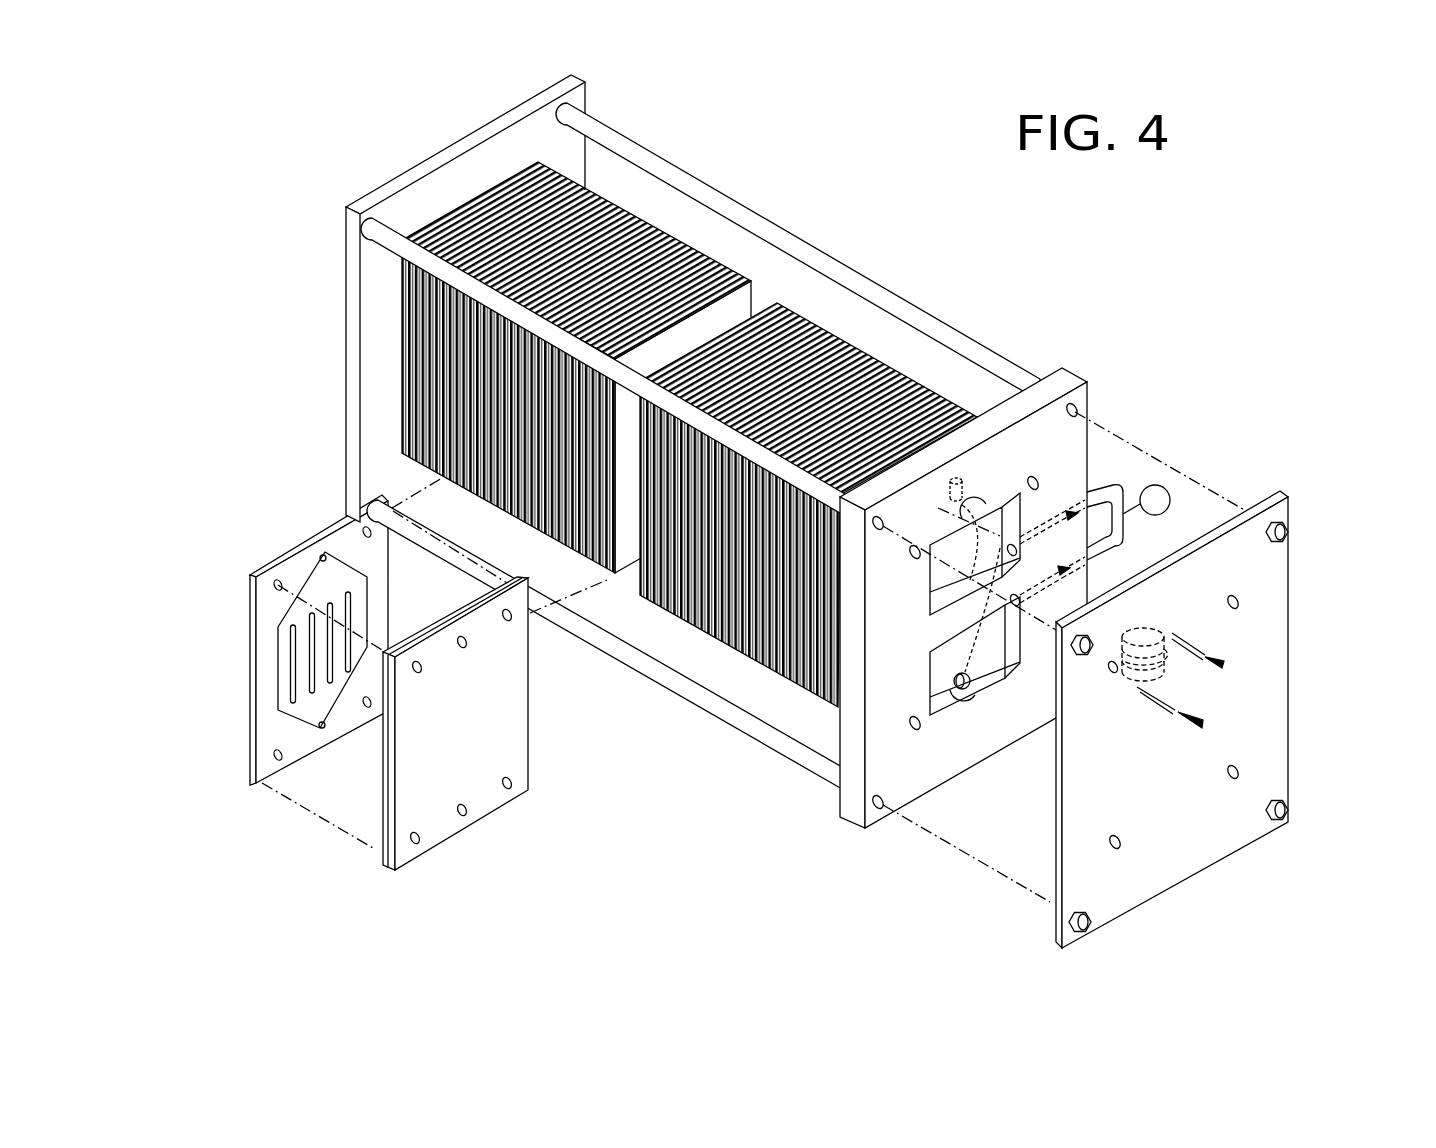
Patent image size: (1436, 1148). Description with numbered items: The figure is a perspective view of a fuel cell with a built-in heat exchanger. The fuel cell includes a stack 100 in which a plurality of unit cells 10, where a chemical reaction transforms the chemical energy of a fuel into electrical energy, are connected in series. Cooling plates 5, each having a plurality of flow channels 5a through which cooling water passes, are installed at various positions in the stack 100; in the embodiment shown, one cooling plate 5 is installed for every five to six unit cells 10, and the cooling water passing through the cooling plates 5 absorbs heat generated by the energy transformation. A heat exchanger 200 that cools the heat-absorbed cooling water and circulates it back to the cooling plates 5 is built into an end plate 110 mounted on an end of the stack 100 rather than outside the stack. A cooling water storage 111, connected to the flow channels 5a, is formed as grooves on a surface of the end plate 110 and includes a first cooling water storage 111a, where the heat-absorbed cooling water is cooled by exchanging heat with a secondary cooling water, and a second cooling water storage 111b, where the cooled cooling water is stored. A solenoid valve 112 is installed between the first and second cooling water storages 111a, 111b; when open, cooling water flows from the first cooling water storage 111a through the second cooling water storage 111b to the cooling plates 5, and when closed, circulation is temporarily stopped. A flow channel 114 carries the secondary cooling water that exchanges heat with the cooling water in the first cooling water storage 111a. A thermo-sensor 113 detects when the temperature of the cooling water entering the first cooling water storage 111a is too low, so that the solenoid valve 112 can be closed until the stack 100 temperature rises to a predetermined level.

The cooling plate 5 is at (590, 501).
The flow channel 5a is at (280, 720).
The unit cell 10 is at (645, 212).
The stack 100 is at (970, 278).
The end plate 110 is at (983, 602).
The cooling water storage 111 is at (985, 672).
The first cooling water storage 111a is at (963, 583).
The second cooling water storage 111b is at (940, 700).
The solenoid valve 112 is at (1170, 506).
The thermo-sensor 113 is at (972, 483).
The flow channel of secondary cooling water 114 is at (1150, 630).
The heat exchanger 200 is at (922, 808).